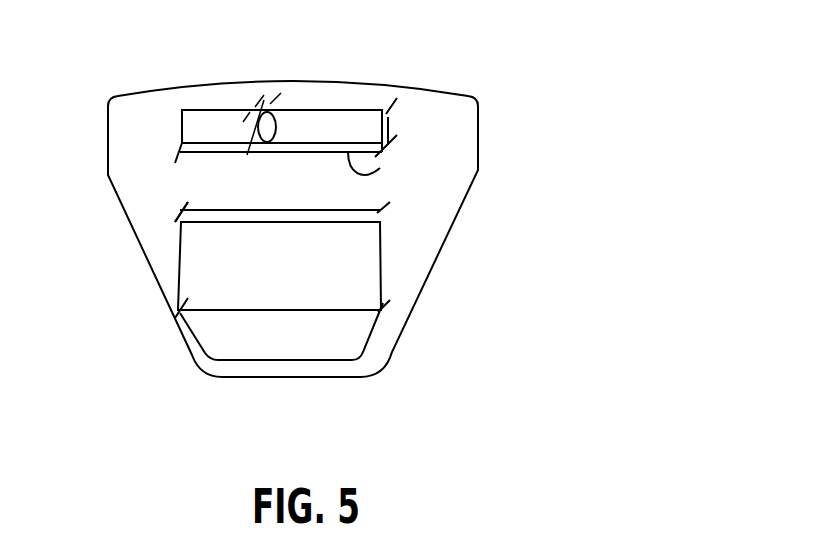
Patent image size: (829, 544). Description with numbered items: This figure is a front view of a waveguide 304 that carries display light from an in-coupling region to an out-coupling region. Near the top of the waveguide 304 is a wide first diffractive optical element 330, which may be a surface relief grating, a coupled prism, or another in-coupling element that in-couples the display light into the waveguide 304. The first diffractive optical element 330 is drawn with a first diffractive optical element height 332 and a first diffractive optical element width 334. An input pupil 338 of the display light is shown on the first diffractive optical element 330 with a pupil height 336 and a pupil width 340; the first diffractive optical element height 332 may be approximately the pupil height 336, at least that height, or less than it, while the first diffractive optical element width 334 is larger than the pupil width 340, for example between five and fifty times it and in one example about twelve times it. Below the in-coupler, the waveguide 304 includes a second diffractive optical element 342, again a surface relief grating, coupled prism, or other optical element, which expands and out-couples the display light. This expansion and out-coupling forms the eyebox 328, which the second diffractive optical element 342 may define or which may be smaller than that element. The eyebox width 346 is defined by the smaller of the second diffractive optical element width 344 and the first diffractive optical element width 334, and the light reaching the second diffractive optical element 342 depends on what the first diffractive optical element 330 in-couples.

The waveguide 304 is at (505, 63).
The eyebox 328 is at (225, 328).
The first diffractive optical element 330 is at (361, 125).
The first diffractive optical element height 332 is at (395, 127).
The first diffractive optical element width 334 is at (380, 168).
The pupil height 336 is at (253, 133).
The input pupil 338 is at (276, 124).
The pupil width 340 is at (269, 101).
The second diffractive optical element 342 is at (367, 267).
The second diffractive optical element width 344 is at (227, 210).
The eyebox width 346 is at (248, 310).